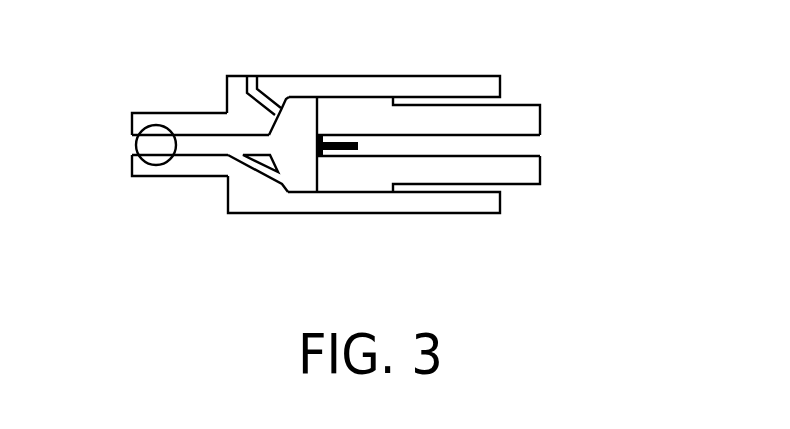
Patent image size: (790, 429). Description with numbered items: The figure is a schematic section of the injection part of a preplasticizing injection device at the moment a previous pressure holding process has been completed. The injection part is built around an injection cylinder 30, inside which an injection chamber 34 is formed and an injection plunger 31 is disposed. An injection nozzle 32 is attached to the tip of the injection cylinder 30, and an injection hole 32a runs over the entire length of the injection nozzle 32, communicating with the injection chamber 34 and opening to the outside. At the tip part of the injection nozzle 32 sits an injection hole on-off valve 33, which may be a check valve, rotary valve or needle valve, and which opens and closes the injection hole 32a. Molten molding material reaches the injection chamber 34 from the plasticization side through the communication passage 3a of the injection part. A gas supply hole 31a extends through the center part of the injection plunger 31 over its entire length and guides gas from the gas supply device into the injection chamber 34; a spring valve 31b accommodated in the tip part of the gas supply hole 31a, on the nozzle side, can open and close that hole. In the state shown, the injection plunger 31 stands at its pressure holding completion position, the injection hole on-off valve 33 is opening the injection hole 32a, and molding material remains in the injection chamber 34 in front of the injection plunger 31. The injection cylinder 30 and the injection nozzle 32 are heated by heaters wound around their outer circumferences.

The injection cylinder 30 is at (480, 75).
The injection plunger 31 is at (377, 113).
The gas supply hole 31a is at (488, 157).
The spring valve 31b is at (337, 140).
The injection nozzle 32 is at (190, 170).
The injection hole 32a is at (220, 147).
The injection hole on-off valve 33 is at (156, 125).
The injection chamber 34 is at (303, 110).
The communication passage 3a is at (263, 104).